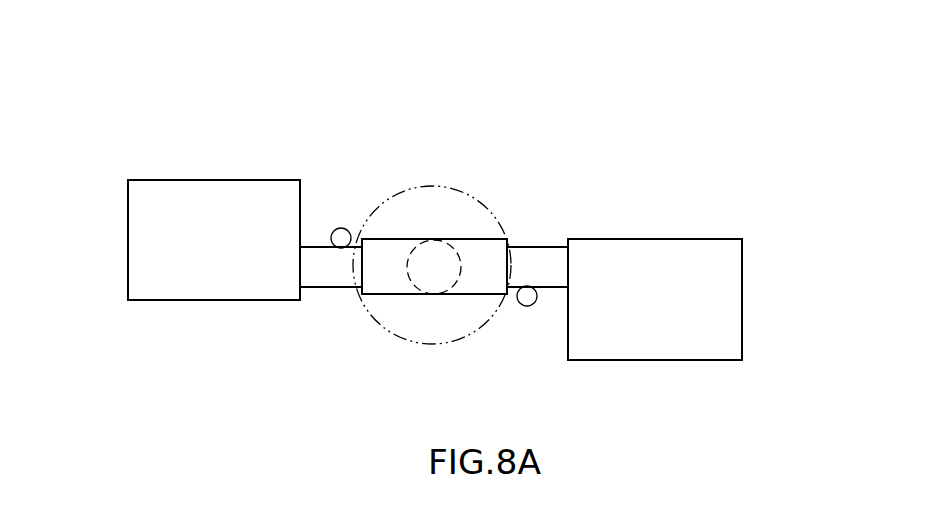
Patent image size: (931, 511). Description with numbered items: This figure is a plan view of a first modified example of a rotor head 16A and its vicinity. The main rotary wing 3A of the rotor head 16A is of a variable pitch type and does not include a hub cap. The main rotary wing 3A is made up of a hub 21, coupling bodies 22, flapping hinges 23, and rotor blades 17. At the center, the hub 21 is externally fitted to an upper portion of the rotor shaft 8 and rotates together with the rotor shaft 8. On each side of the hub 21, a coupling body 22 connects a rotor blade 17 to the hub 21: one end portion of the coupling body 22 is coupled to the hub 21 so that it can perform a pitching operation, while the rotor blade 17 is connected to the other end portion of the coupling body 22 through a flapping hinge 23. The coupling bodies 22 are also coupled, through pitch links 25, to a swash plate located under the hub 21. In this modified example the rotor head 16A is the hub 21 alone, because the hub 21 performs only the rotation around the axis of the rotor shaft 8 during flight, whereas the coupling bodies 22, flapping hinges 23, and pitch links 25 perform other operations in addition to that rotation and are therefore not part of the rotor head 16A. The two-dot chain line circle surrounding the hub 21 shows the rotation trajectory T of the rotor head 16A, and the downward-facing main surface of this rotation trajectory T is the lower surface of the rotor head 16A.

The main rotary wing 3A is at (298, 120).
The rotor blade 17 is at (137, 277).
The coupling body 22 is at (528, 257).
The flapping hinge 23 is at (567, 250).
The hub 21 is at (478, 287).
The rotor head 16A is at (434, 333).
The rotation trajectory T is at (407, 187).
The rotor shaft 8 is at (436, 240).
The pitch link 25 is at (341, 228).